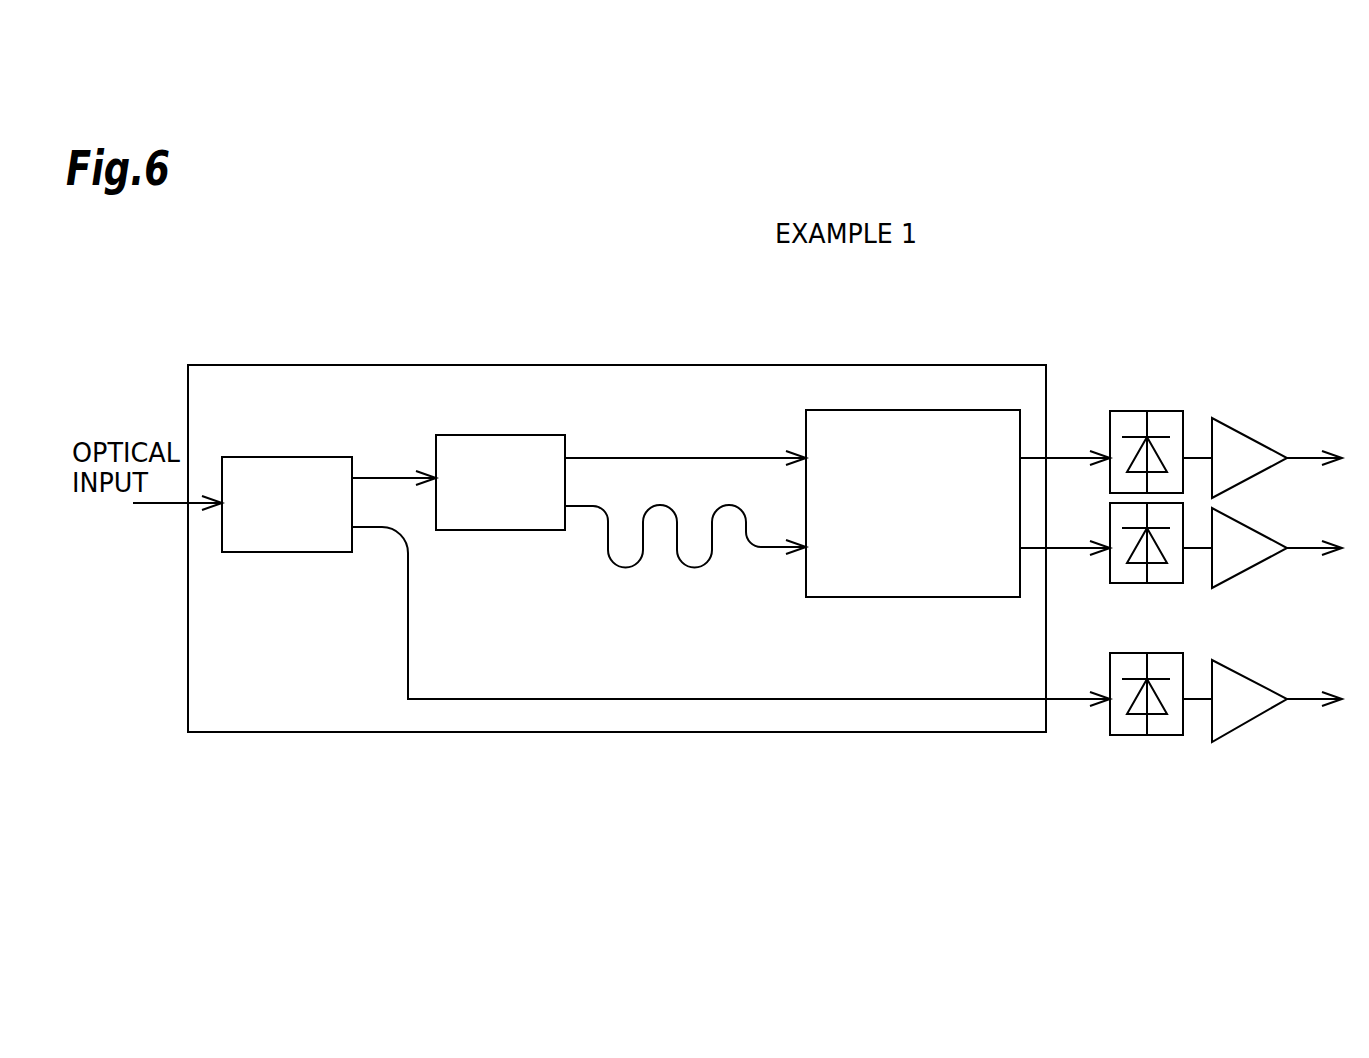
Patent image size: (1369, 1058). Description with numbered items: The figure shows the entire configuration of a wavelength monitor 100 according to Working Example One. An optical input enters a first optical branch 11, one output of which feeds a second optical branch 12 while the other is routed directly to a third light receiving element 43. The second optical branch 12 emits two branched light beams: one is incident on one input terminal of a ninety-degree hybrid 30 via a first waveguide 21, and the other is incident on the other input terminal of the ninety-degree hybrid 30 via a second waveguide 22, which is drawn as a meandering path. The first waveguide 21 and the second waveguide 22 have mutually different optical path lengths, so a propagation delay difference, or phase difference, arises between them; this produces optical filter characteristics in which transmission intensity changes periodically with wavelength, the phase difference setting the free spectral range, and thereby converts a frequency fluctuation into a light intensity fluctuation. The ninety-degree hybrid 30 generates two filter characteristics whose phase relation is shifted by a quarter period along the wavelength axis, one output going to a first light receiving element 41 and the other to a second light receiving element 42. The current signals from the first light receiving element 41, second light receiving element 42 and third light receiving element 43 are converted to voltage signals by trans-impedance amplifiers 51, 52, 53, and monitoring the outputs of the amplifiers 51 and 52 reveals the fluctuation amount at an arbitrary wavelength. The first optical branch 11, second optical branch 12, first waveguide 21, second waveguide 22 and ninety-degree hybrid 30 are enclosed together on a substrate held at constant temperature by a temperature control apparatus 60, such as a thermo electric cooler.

The wavelength monitor 100 is at (1090, 281).
The temperature control apparatus 60 is at (288, 734).
The first optical branch 11 is at (326, 455).
The second optical branch 12 is at (550, 432).
The first waveguide 21 is at (675, 456).
The second waveguide 22 is at (622, 568).
The 90° hybrid 30 is at (861, 598).
The first light receiving element 41 is at (1180, 410).
The second light receiving element 42 is at (1110, 573).
The third light receiving element 43 is at (1110, 727).
The trans-impedance amplifier 51 is at (1258, 438).
The trans-impedance amplifier 52 is at (1258, 527).
The trans-impedance amplifier 53 is at (1258, 680).